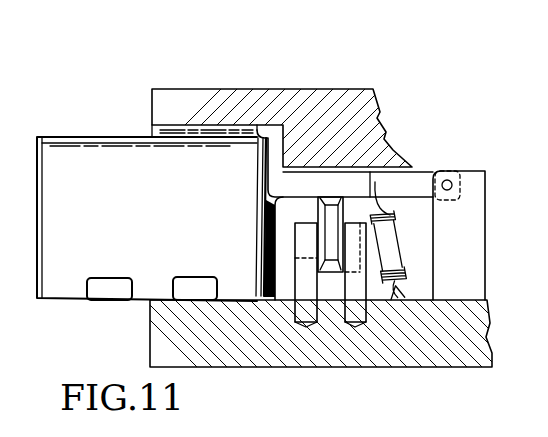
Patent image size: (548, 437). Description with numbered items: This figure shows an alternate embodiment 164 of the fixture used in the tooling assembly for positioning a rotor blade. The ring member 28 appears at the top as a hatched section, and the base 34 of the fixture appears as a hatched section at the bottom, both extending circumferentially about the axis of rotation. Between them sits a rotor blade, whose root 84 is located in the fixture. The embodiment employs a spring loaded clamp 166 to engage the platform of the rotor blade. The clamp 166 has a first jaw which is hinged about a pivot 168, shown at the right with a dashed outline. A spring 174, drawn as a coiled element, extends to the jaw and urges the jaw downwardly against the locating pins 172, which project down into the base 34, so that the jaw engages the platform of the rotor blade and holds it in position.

The alternate embodiment 164 is at (268, 76).
The ring member 28 is at (328, 118).
The spring loaded clamp 166 is at (418, 183).
The pivot 168 is at (452, 180).
The root 84 is at (308, 248).
The locating pins 172 is at (351, 328).
The spring 174 is at (397, 218).
The base 34 is at (173, 320).